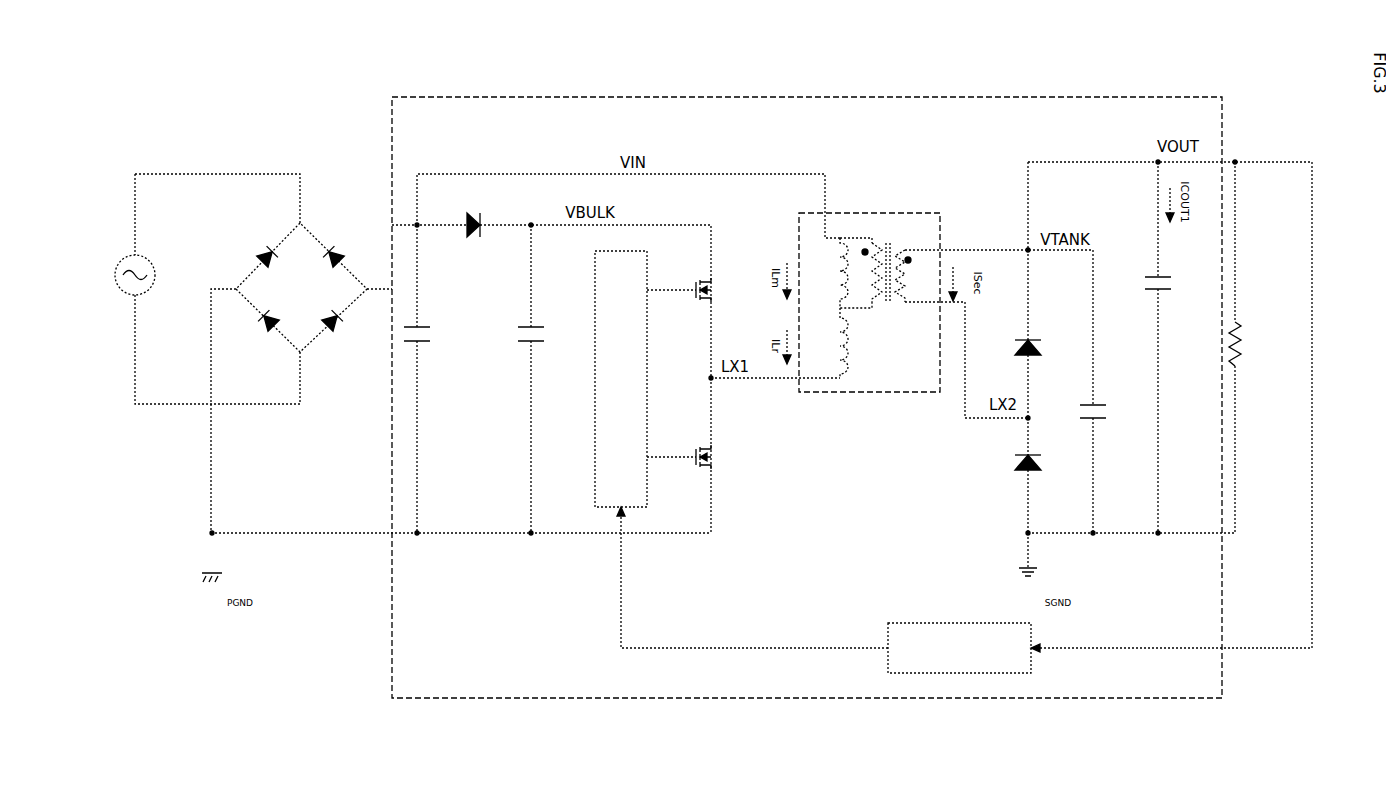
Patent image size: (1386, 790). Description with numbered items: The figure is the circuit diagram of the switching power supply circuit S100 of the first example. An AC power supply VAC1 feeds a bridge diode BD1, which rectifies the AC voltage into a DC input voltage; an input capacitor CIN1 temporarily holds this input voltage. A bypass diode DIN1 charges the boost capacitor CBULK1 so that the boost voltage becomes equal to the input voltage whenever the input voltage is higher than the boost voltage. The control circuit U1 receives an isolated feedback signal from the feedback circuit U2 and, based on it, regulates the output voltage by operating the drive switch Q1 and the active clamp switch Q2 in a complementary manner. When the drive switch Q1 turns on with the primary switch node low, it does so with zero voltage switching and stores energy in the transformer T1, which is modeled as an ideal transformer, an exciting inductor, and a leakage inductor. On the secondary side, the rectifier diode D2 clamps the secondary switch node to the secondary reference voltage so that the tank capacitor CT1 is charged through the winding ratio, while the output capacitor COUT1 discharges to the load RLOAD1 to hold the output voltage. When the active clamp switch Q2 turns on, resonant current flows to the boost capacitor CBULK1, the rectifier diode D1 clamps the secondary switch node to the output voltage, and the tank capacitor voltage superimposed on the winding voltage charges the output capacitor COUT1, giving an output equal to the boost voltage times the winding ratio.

The switching power supply circuit S100 is at (807, 384).
The AC power supply VAC1 is at (207, 289).
The bridge diode BD1 is at (301, 378).
The bypass diode DIN1 is at (485, 232).
The input capacitor CIN1 is at (429, 379).
The boost capacitor CBULK1 is at (549, 379).
The control circuit U1 is at (621, 369).
The drive switch Q1 is at (687, 464).
The active clamp switch Q2 is at (687, 297).
The transformer T1 is at (946, 315).
The rectifier diode D1 is at (1037, 290).
The rectifier diode D2 is at (1037, 475).
The tank capacitor CT1 is at (1103, 391).
The output capacitor COUT1 is at (1175, 347).
The load RLOAD1 is at (1257, 347).
The feedback circuit U2 is at (959, 637).